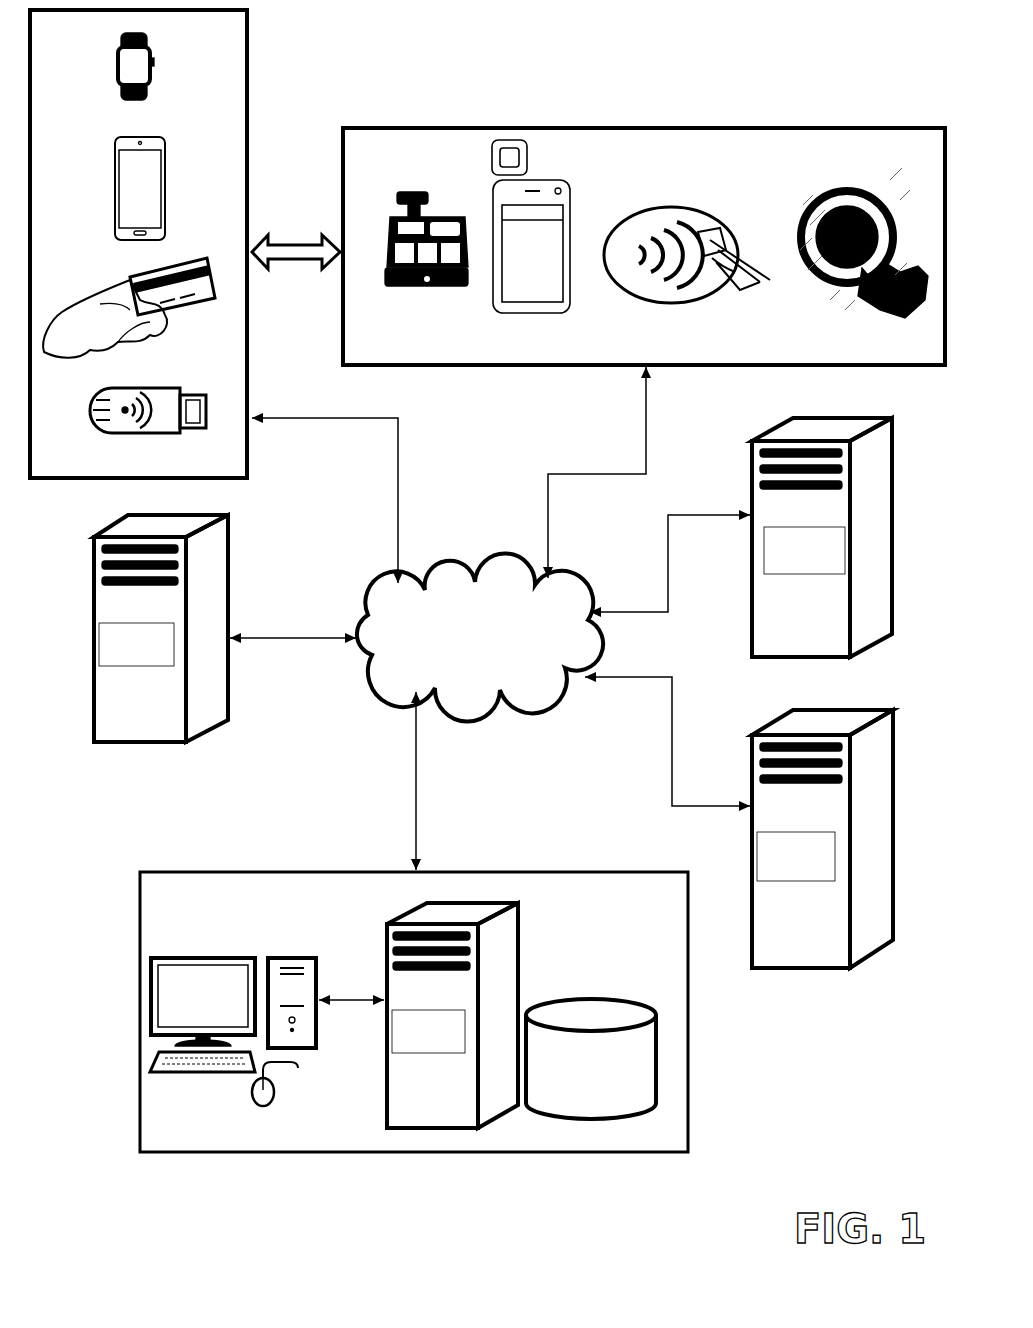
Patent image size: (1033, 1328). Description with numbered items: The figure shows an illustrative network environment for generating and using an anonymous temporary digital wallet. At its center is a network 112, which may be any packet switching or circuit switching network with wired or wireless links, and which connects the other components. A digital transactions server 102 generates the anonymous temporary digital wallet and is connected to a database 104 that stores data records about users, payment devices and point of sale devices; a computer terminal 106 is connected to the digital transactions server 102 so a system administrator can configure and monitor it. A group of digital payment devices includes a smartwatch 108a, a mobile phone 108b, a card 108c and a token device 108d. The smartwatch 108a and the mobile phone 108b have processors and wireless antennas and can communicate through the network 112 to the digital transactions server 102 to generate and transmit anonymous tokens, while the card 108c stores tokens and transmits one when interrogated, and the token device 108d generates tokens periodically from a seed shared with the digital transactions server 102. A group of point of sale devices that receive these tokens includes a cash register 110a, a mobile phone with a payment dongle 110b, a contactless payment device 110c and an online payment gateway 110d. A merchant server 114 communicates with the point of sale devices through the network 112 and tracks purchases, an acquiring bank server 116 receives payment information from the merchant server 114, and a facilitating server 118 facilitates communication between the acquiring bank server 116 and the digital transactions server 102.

The digital transactions server 102 is at (452, 1015).
The database 104 is at (591, 1059).
The computer terminal 106 is at (233, 1032).
The smartwatch 108a is at (139, 73).
The mobile phone 108b is at (150, 171).
The card 108c is at (180, 262).
The token device 108d is at (150, 396).
The cash register 110a is at (487, 177).
The mobile phone with a payment dongle 110b is at (538, 183).
The contactless payment device 110c is at (737, 183).
The online payment gateway 110d is at (840, 200).
The network 112 is at (480, 637).
The merchant server 114 is at (161, 628).
The acquiring bank server 116 is at (822, 537).
The facilitating server 118 is at (822, 839).